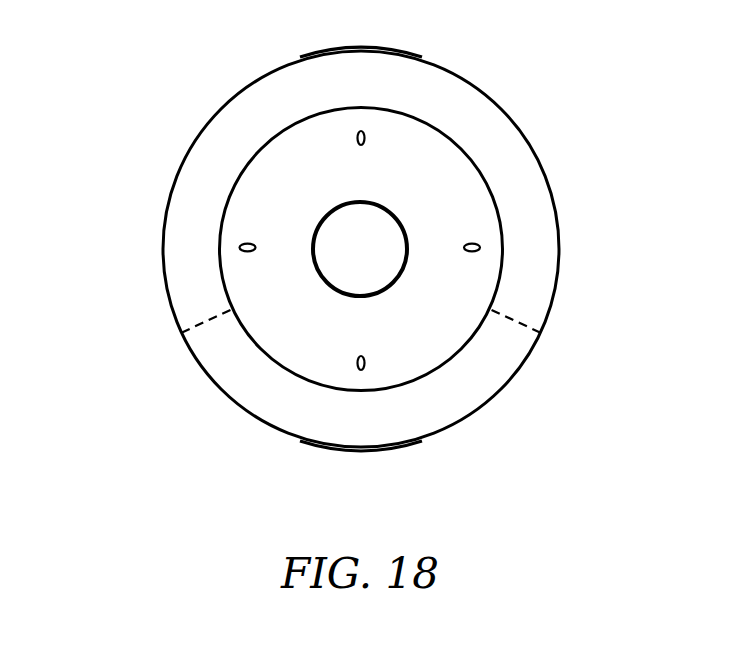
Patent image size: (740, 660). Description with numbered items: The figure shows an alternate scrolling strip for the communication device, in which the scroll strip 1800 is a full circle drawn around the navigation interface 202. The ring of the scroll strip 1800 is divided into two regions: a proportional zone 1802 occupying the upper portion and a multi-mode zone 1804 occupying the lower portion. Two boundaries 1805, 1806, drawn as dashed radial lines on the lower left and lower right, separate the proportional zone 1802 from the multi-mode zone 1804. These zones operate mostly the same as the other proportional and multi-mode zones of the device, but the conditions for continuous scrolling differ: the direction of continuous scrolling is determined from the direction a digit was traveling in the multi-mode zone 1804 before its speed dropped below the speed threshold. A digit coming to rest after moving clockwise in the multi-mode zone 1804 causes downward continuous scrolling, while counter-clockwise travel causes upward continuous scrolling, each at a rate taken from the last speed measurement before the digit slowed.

The scroll strip 1800 is at (198, 154).
The navigation interface 202 is at (455, 186).
The proportional zone 1802 is at (360, 63).
The multi-mode zone 1804 is at (361, 437).
The boundary 1805 is at (193, 332).
The boundary 1806 is at (528, 332).